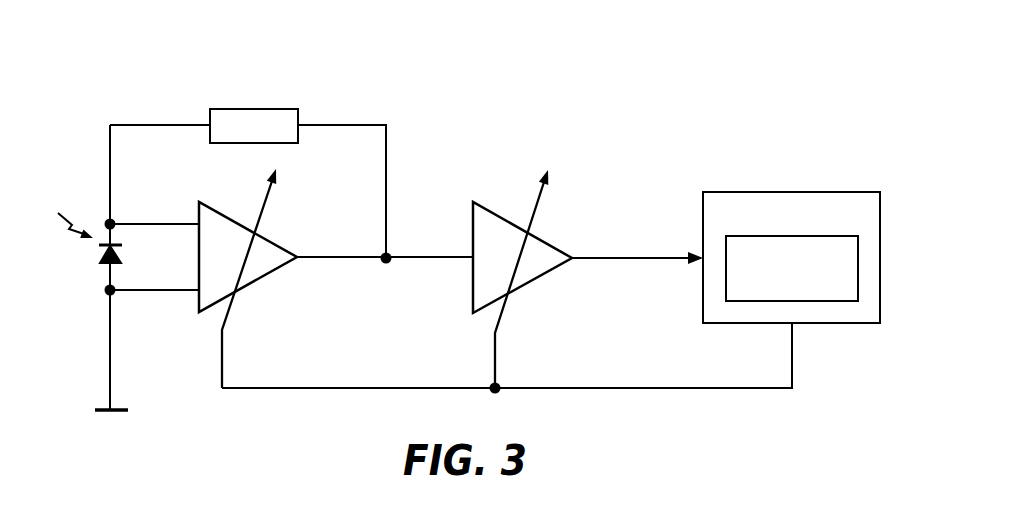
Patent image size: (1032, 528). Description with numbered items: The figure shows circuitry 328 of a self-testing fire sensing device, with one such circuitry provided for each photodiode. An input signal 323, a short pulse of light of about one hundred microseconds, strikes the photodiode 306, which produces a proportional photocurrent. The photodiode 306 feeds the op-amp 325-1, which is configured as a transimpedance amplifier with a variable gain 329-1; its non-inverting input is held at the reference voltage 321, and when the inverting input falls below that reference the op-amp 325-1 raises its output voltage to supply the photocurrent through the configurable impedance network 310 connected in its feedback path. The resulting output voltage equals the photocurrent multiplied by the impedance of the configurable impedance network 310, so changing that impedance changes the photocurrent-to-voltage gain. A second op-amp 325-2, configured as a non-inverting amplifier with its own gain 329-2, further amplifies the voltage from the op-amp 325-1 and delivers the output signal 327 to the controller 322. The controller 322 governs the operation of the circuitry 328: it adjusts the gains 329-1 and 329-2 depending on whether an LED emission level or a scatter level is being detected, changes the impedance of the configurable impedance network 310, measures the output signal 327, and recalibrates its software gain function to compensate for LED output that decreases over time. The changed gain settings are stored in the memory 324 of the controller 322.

The circuitry 328 is at (130, 46).
The configurable impedance network 310 is at (258, 108).
The input signal 323 is at (72, 225).
The photodiode 306 is at (100, 260).
The reference voltage 321 is at (100, 411).
The op-amp 325-1 is at (258, 268).
The gain 329-1 is at (267, 195).
The op-amp 325-2 is at (533, 268).
The gain 329-2 is at (545, 193).
The output signal 327 is at (620, 256).
The controller 322 is at (745, 196).
The memory 324 is at (848, 268).